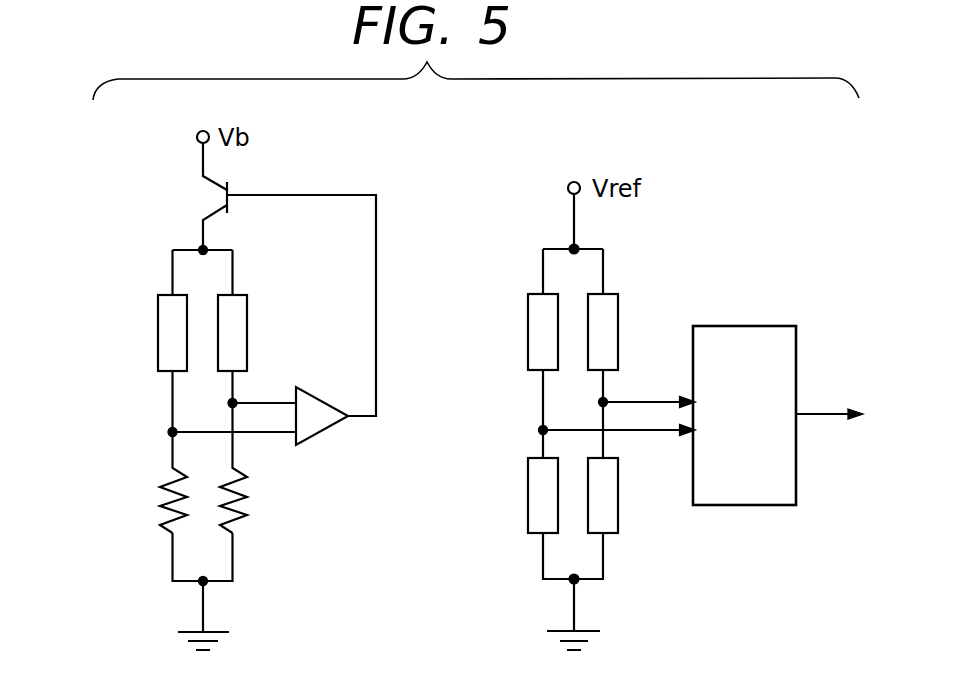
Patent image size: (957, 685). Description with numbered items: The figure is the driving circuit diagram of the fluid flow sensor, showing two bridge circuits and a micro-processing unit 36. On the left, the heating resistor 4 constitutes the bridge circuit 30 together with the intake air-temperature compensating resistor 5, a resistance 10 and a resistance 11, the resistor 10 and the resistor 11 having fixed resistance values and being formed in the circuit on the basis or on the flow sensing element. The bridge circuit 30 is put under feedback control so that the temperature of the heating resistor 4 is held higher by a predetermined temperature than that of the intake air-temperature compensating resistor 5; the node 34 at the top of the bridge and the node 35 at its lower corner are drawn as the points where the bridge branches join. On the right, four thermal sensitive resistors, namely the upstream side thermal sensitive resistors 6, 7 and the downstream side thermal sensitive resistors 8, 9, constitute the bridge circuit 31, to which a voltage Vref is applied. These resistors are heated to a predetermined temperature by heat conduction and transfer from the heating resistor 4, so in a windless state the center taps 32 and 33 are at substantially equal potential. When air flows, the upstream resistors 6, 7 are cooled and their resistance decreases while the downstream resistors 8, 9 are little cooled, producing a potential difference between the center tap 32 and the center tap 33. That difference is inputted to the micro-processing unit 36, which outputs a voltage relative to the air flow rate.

The heating resistor 4 is at (158, 312).
The intake air-temperature compensating resistor 5 is at (242, 309).
The upstream side thermal sensitive resistor 6 is at (528, 318).
The upstream side thermal sensitive resistor 7 is at (618, 513).
The downstream side thermal sensitive resistor 8 is at (618, 305).
The downstream side thermal sensitive resistor 9 is at (528, 513).
The resistance 10 is at (160, 512).
The resistance 11 is at (245, 500).
The bridge circuit 30 is at (195, 406).
The bridge circuit 31 is at (558, 404).
The center tap 32 is at (603, 402).
The center tap 33 is at (543, 430).
The bias node 34 is at (203, 250).
The feedback node 35 is at (172, 432).
The micro-processing unit 36 is at (770, 326).